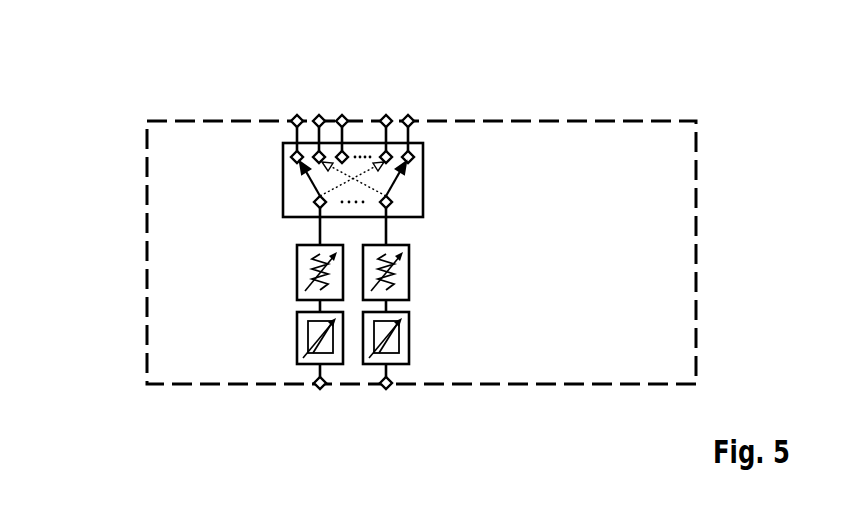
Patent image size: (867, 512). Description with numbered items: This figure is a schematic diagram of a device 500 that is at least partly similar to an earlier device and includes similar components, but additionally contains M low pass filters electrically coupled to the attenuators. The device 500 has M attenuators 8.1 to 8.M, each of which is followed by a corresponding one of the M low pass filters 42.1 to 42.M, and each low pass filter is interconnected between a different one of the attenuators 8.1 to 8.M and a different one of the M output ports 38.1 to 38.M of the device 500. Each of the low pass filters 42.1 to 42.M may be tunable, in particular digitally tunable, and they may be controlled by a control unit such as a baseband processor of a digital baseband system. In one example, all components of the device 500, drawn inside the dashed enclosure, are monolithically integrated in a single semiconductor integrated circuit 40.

The device 500 is at (134, 57).
The semiconductor integrated circuit 40 is at (696, 188).
The attenuator 8.1 is at (297, 264).
The attenuator 8.M is at (409, 265).
The low pass filter 42.1 is at (297, 332).
The low pass filter 42.M is at (409, 331).
The output port 38.1 is at (314, 391).
The output port 38.M is at (392, 391).